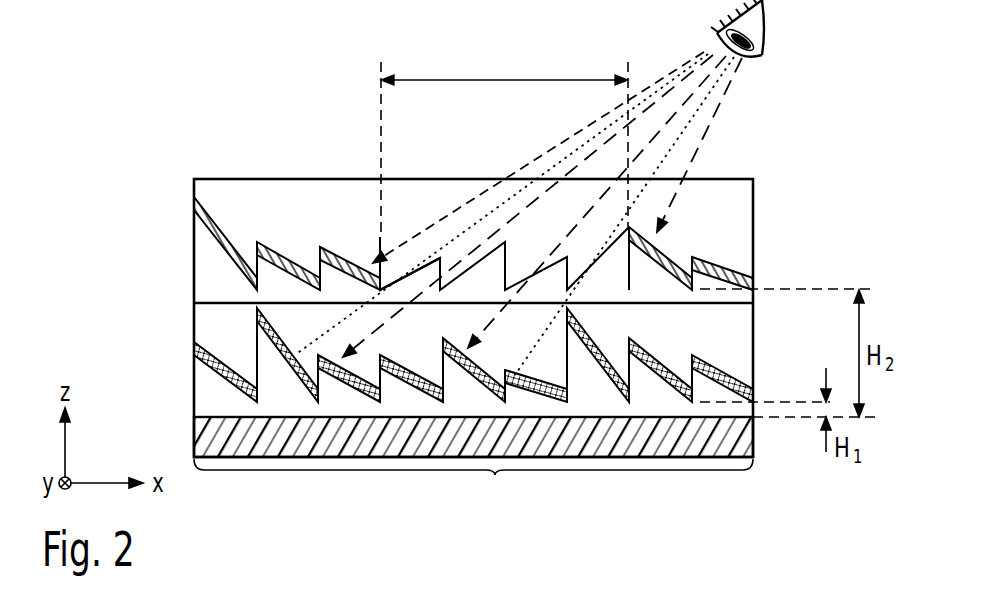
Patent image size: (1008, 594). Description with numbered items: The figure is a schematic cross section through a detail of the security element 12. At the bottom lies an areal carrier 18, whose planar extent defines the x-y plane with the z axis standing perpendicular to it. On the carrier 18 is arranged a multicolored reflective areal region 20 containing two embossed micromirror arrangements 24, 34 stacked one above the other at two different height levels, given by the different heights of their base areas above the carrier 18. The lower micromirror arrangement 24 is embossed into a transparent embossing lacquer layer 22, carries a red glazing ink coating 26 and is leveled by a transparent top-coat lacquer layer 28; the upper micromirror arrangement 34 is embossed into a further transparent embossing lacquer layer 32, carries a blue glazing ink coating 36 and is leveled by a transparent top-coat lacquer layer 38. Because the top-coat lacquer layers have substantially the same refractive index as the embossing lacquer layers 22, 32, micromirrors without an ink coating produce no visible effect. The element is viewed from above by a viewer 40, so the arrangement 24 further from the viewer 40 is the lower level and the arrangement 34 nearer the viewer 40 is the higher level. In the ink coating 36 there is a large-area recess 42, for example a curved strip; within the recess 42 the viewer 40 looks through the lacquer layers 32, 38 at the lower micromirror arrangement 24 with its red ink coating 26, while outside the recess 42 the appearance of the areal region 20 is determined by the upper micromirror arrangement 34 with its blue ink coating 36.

The security element 12 is at (106, 207).
The areal carrier 18 is at (207, 437).
The multicolored reflective areal region 20 is at (473, 486).
The transparent embossing lacquer layer 22 is at (207, 390).
The micromirror arrangement 24 is at (607, 378).
The ink coating 26 is at (732, 366).
The transparent top-coat lacquer layer 28 is at (207, 326).
The transparent embossing lacquer layer 32 is at (207, 283).
The micromirror arrangement 34 is at (653, 262).
The ink coating 36 is at (732, 262).
The transparent top-coat lacquer layer 38 is at (207, 196).
The viewer 40 is at (760, 22).
The recess 42 is at (504, 142).